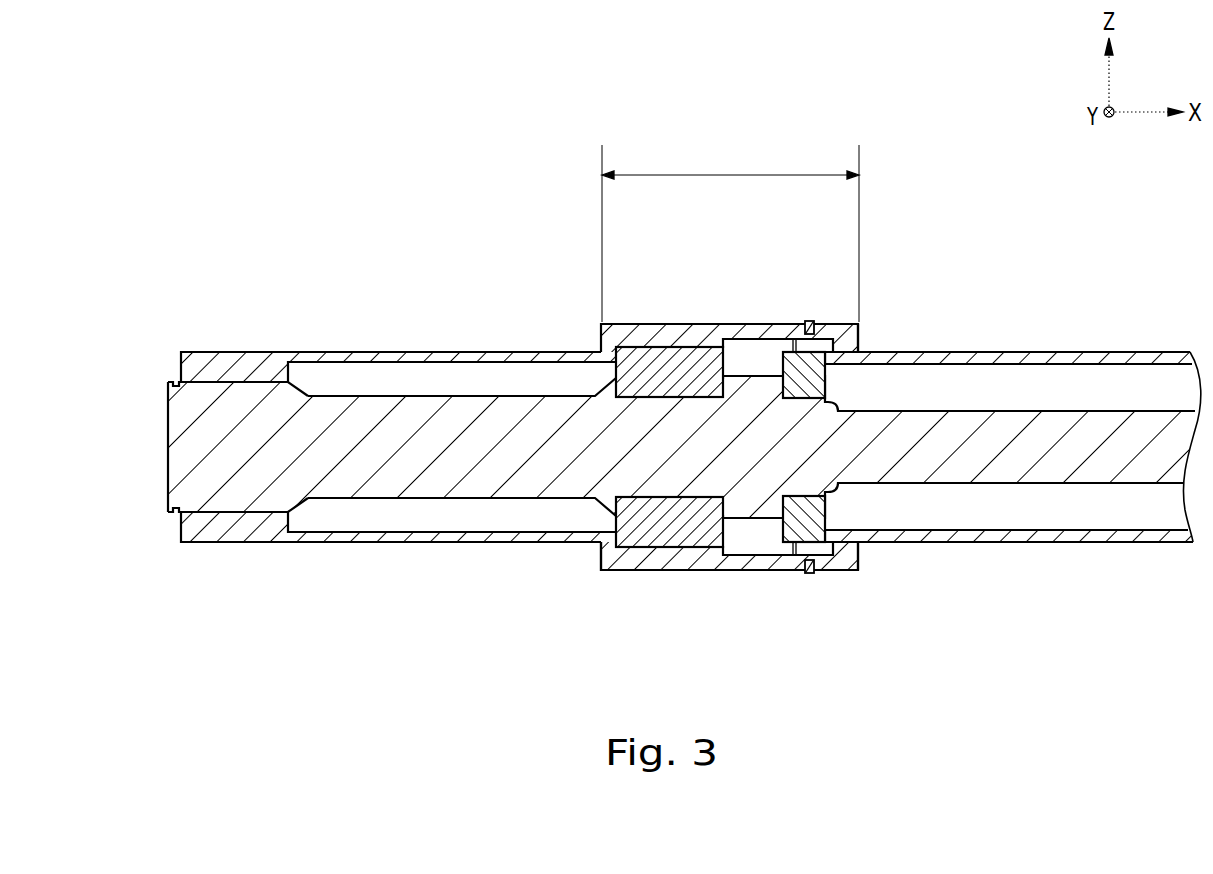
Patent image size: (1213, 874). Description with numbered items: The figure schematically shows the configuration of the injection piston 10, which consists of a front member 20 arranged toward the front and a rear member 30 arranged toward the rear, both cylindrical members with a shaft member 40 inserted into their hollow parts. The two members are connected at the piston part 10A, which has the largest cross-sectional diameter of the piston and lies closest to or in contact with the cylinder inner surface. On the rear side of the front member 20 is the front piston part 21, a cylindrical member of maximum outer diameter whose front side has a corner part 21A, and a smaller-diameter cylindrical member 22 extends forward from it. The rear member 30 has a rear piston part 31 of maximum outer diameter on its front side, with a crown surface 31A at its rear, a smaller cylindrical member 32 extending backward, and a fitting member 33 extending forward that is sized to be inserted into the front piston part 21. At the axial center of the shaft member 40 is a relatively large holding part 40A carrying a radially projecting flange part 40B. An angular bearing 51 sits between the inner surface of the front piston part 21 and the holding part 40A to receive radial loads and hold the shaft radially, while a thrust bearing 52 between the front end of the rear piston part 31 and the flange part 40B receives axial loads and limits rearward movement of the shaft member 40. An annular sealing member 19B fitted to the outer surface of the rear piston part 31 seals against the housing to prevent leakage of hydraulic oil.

The injection piston 10 is at (234, 156).
The piston part 10A is at (730, 233).
The front member 20 is at (442, 283).
The front piston part 21 is at (668, 324).
The corner part 21A is at (592, 581).
The cylindrical member 22 is at (345, 353).
The rear member 30 is at (1022, 283).
The rear piston part 31 is at (860, 327).
The crown surface 31A is at (867, 342).
The cylindrical member 32 is at (1100, 352).
The fitting member 33 is at (803, 322).
The shaft member 40 is at (170, 410).
The holding part 40A is at (707, 438).
The flange part 40B is at (762, 507).
The angular bearing 51 is at (660, 541).
The thrust bearing 52 is at (825, 515).
The sealing member 19B is at (813, 575).